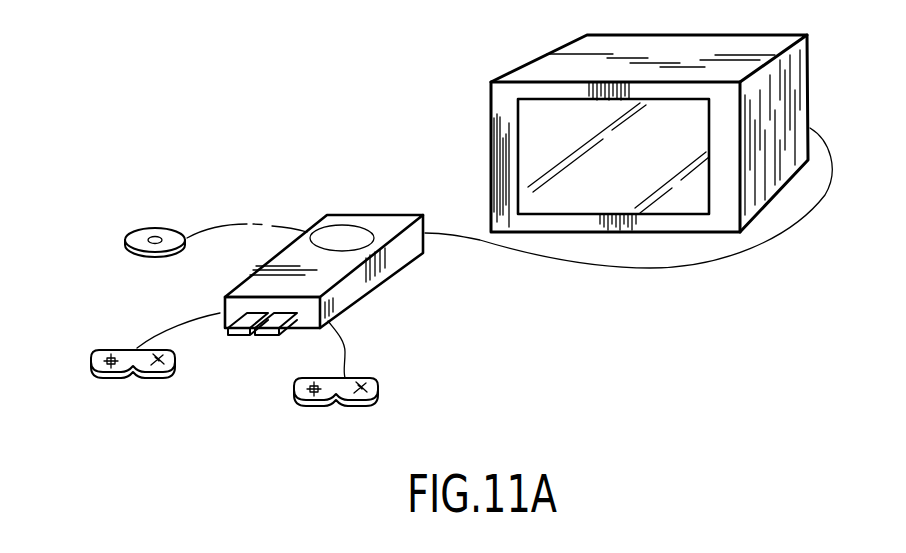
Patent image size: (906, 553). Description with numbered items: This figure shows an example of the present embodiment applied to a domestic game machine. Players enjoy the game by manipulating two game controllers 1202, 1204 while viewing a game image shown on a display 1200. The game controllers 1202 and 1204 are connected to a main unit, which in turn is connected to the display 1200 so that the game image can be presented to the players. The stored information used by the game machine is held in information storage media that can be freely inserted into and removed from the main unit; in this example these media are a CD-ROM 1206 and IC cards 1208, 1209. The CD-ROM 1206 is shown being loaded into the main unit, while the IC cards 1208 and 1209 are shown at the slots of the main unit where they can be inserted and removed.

The display 1200 is at (537, 128).
The game controller 1202 is at (103, 348).
The game controller 1204 is at (362, 378).
The CD-ROM 1206 is at (138, 233).
The IC card 1208 is at (240, 325).
The IC card 1209 is at (267, 338).